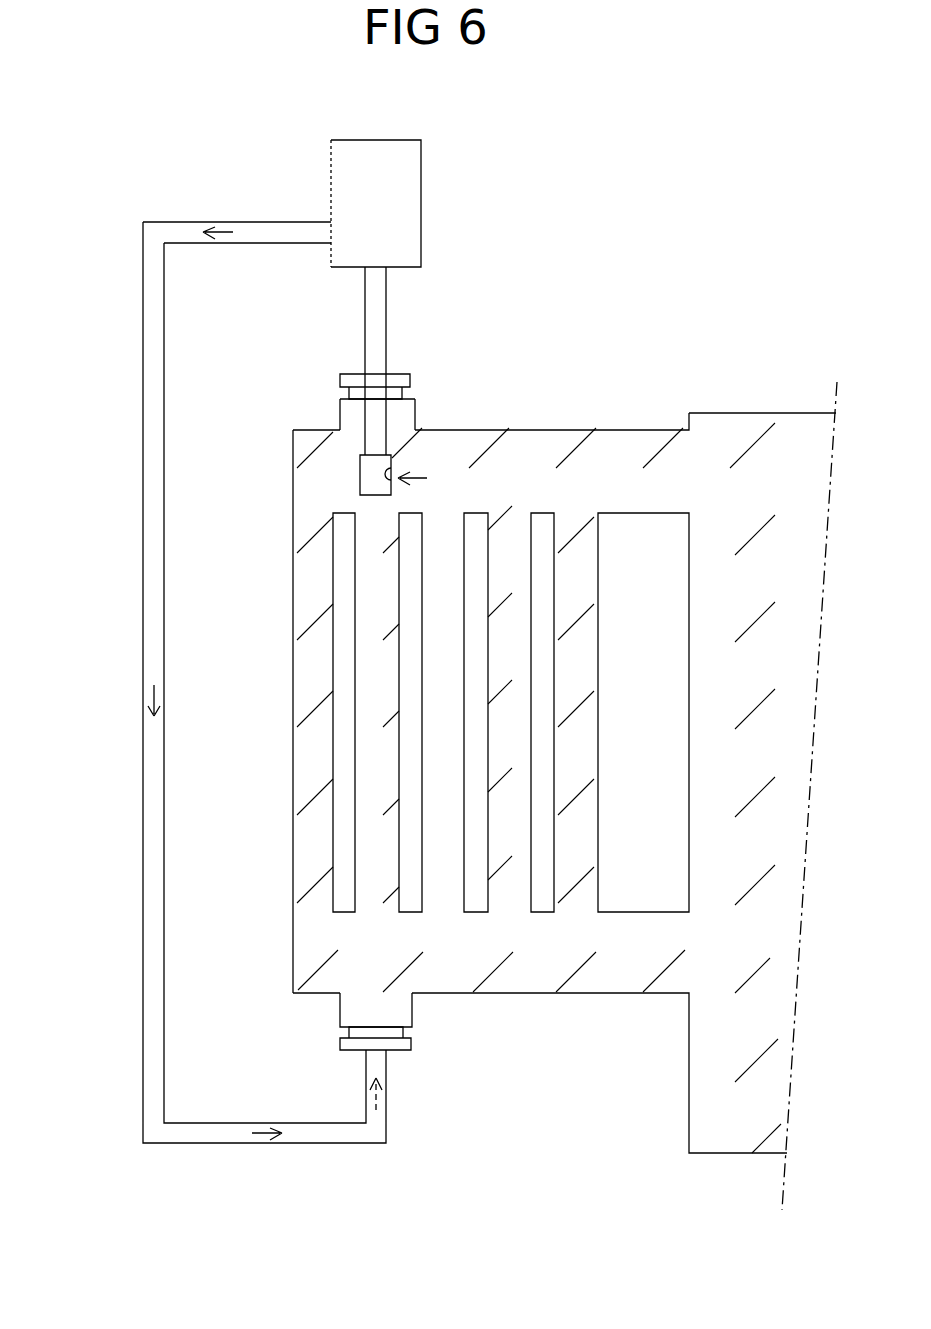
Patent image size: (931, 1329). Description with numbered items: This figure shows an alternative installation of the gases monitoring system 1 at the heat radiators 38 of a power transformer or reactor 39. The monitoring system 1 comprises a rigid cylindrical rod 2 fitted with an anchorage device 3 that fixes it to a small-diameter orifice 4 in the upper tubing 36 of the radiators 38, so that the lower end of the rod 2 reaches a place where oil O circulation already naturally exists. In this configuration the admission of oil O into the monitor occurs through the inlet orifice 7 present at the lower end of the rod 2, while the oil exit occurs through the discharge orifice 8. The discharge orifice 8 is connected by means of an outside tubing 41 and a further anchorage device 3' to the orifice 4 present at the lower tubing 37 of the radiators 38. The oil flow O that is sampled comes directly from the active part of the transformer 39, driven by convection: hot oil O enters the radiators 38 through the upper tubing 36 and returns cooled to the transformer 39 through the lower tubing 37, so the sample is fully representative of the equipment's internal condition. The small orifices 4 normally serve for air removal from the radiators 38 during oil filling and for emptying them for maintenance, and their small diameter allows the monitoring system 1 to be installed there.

The gases monitoring system 1 is at (329, 168).
The rigid cylindrical rod 2 is at (390, 331).
The anchorage device 3 is at (339, 349).
The anchorage device 3' is at (414, 1061).
The orifice 4 is at (340, 410).
The inlet orifice 7 is at (395, 465).
The discharge orifice 8 is at (330, 220).
The upper tubing 36 is at (603, 427).
The lower tubing 37 is at (660, 998).
The heat radiators 38 is at (292, 715).
The transformer 39 is at (730, 412).
The outside tubing 41 is at (142, 363).
The oil O is at (198, 232).